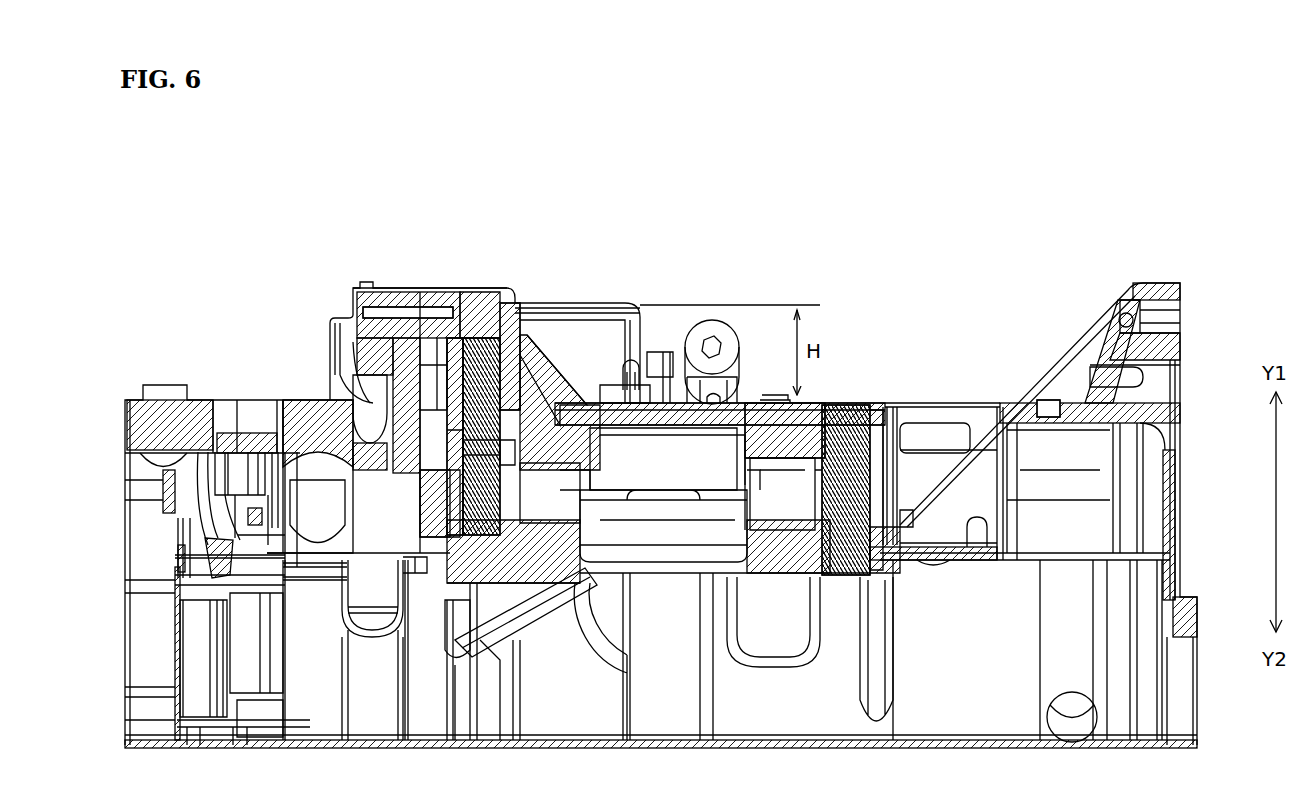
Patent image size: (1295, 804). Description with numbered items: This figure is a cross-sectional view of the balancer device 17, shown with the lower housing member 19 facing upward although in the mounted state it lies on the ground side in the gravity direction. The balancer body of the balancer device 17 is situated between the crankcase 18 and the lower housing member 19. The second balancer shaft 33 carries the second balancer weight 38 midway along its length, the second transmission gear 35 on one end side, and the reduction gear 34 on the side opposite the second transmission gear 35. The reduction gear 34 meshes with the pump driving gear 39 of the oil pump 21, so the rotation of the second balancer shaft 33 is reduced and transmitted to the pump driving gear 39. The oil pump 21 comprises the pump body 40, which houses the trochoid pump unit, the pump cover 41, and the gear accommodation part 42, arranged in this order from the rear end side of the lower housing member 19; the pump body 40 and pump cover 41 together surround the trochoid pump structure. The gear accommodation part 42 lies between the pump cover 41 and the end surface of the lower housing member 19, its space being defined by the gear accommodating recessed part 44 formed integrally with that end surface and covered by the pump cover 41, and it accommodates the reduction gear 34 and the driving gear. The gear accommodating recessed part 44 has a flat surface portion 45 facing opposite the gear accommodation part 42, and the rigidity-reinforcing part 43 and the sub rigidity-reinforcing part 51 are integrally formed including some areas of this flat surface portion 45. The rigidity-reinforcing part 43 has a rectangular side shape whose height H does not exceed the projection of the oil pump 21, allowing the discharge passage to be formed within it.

The balancer device 17 is at (675, 540).
The crankcase 18 is at (150, 655).
The lower housing member 19 is at (762, 418).
The oil pump 21 is at (368, 381).
The second balancer shaft 33 is at (790, 480).
The reduction gear 34 is at (485, 525).
The second transmission gear 35 is at (845, 565).
The second balancer weight 38 is at (655, 445).
The pump driving gear 39 is at (485, 350).
The pump body 40 is at (390, 335).
The pump cover 41 is at (432, 320).
The gear accommodation part 42 is at (458, 340).
The rigidity-reinforcing part 43 is at (605, 345).
The gear accommodating recessed part 44 is at (507, 335).
The flat surface portion 45 is at (525, 350).
The sub rigidity-reinforcing part 51 is at (545, 382).